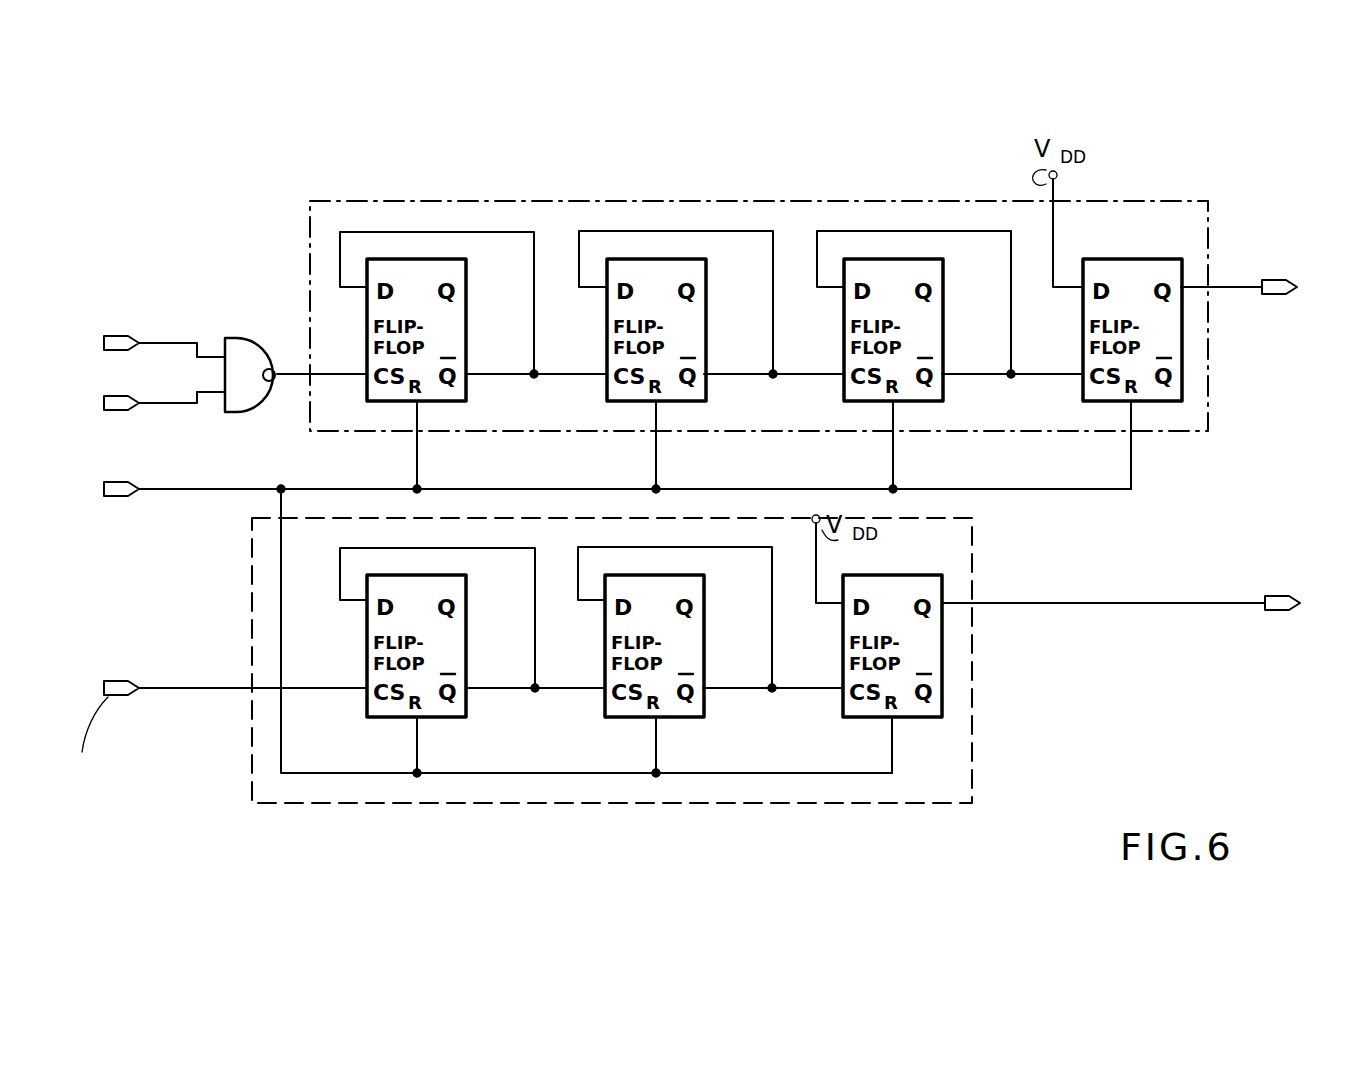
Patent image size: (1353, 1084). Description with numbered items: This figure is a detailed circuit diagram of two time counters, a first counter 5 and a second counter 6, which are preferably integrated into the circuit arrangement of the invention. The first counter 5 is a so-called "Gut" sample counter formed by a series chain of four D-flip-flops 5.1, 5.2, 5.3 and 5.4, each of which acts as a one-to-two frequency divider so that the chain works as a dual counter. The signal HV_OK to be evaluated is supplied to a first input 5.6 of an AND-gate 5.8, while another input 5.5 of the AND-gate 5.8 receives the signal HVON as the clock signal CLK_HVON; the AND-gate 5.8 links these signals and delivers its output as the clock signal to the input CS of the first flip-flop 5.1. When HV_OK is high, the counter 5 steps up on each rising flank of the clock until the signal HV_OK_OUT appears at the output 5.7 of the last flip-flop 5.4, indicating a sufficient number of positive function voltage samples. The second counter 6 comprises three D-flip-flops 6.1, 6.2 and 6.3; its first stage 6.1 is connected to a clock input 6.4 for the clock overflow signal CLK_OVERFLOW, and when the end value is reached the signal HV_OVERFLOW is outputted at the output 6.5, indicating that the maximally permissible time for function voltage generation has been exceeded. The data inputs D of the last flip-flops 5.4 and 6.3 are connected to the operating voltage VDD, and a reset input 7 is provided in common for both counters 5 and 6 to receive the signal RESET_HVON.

The first counter 5 is at (660, 201).
The D-flip-flop 5.1 is at (502, 306).
The D-flip-flop 5.2 is at (704, 323).
The D-flip-flop 5.3 is at (974, 334).
The D-flip-flop 5.4 is at (1083, 344).
The input of the AND-gate 5.5 is at (115, 411).
The input of the AND-gate 5.6 is at (120, 335).
The output of the first counter 5.7 is at (1258, 256).
The AND-gate 5.8 is at (272, 344).
The second counter 6 is at (972, 752).
The D-flip-flop 6.1 is at (367, 655).
The D-flip-flop 6.2 is at (605, 655).
The D-flip-flop 6.3 is at (843, 648).
The clock input 6.4 is at (120, 680).
The output of the second counter 6.5 is at (1262, 592).
The reset input 7 is at (117, 497).